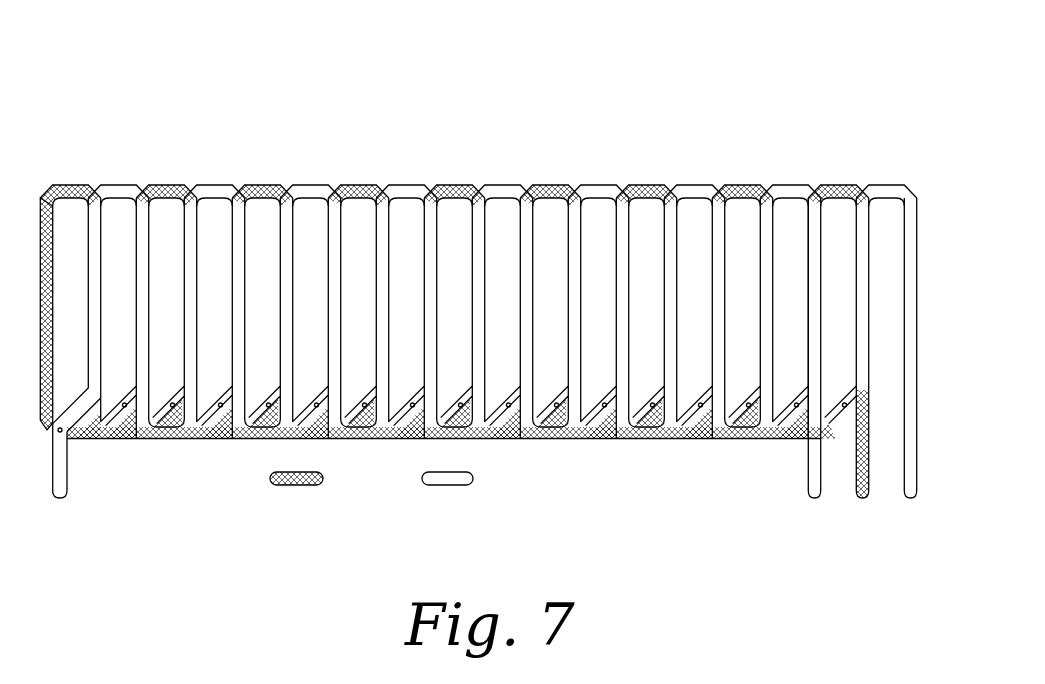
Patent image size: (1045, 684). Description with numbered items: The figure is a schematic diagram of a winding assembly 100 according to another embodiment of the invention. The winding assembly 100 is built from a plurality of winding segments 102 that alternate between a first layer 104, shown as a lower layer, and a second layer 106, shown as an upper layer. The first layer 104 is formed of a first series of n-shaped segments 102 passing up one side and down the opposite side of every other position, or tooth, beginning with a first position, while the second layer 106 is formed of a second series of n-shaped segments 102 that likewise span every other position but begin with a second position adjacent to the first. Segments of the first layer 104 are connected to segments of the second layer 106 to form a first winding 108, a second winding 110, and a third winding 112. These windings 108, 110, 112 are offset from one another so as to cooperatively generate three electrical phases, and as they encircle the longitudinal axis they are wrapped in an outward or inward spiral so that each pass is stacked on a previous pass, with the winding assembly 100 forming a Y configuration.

The winding assembly 100 is at (323, 115).
The winding segments 102 is at (165, 185).
The first layer 104 is at (280, 486).
The second layer 106 is at (455, 486).
The first winding 108 is at (808, 508).
The second winding 110 is at (858, 508).
The third winding 112 is at (907, 508).